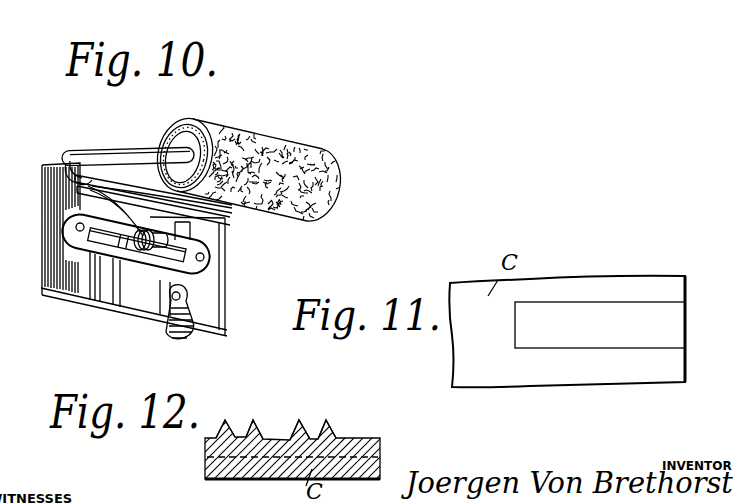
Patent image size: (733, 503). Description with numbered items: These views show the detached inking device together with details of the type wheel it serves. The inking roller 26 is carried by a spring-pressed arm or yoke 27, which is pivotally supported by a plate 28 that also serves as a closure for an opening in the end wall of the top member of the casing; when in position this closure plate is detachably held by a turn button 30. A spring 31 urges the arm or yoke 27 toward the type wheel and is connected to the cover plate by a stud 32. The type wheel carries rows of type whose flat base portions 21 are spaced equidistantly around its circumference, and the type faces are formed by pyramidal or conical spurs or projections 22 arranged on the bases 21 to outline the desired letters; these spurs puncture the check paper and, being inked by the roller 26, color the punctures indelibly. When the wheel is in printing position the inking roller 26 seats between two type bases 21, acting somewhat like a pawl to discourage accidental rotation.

In FIG. 11, the type row base 21 is at (536, 346).
In FIG. 12, the type row base 21 is at (266, 440).
In FIG. 11, the spurs or projections 22 is at (594, 333).
In FIG. 12, the spurs or projections 22 is at (226, 424).
In FIG. 10, the inking roller 26 is at (258, 146).
In FIG. 10, the arm or yoke 27 is at (128, 165).
In FIG. 10, the closure plate 28 is at (73, 279).
In FIG. 10, the turn button 30 is at (166, 324).
In FIG. 10, the spring 31 is at (136, 252).
In FIG. 10, the stud 32 is at (160, 233).